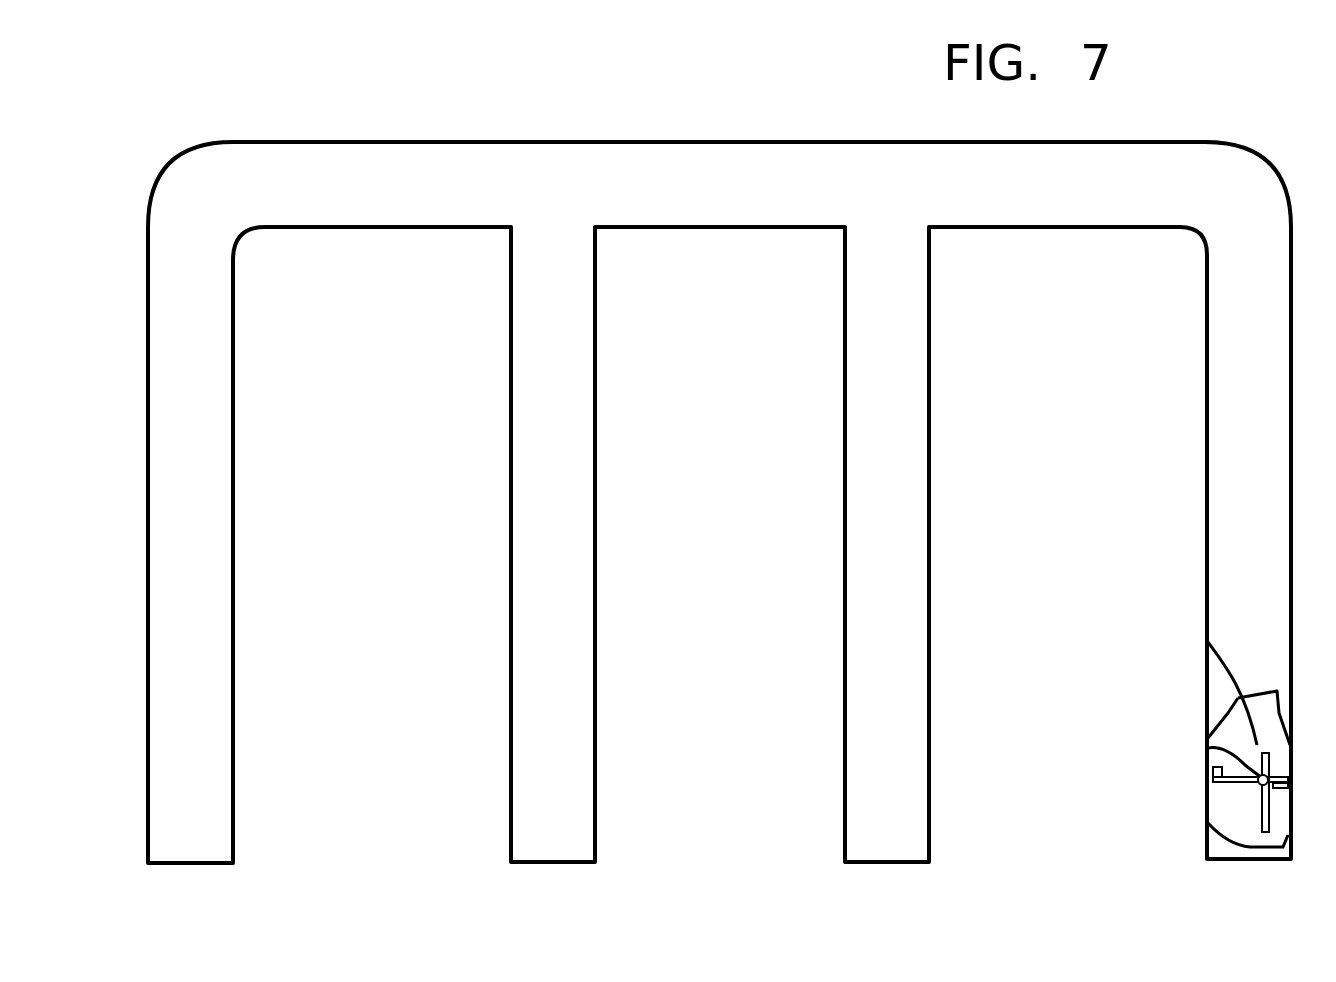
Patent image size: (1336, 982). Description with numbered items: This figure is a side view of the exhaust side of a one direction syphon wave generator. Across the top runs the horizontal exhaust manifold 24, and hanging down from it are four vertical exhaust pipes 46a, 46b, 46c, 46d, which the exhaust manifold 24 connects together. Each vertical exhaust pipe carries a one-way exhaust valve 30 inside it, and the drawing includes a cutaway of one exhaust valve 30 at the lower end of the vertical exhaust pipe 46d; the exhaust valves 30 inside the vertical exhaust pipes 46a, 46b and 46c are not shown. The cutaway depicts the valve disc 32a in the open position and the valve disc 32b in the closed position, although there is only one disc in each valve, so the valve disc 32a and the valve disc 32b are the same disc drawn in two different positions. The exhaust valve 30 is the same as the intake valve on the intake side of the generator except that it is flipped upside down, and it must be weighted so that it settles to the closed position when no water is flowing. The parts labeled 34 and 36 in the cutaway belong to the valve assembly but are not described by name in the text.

The exhaust manifold 24 is at (790, 227).
The vertical exhaust pipe 46a is at (233, 657).
The vertical exhaust pipe 46b is at (511, 493).
The vertical exhaust pipe 46c is at (929, 540).
The vertical exhaust pipe 46d is at (1207, 420).
The exhaust valve 30 is at (1208, 642).
The valve disc 32a is at (1262, 818).
The valve disc 32b is at (1208, 748).
The conductor bar 34 is at (1258, 786).
The contact pad 36 is at (1213, 772).